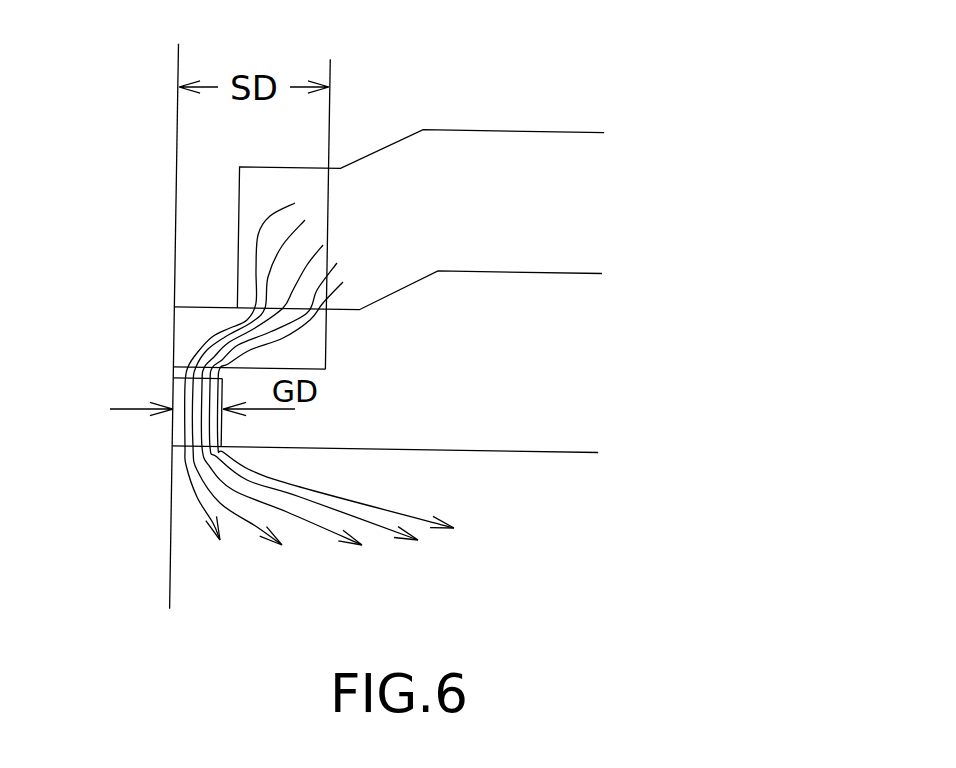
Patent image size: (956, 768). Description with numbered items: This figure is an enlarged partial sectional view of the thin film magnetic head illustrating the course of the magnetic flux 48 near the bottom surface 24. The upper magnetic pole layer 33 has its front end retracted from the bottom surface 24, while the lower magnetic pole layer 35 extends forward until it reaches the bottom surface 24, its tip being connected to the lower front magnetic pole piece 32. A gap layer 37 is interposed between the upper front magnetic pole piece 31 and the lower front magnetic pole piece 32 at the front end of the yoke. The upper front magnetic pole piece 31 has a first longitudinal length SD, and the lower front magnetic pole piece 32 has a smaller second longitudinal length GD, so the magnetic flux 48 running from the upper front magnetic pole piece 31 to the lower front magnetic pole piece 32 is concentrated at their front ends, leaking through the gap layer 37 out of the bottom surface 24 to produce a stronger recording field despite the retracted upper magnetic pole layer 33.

The bottom surface 24 is at (178, 142).
The upper front magnetic pole piece 31 is at (174, 322).
The lower front magnetic pole piece 32 is at (175, 430).
The upper magnetic pole layer 33 is at (397, 142).
The lower magnetic pole layer 35 is at (408, 450).
The gap layer 37 is at (173, 373).
The magnetic flux 48 is at (263, 226).